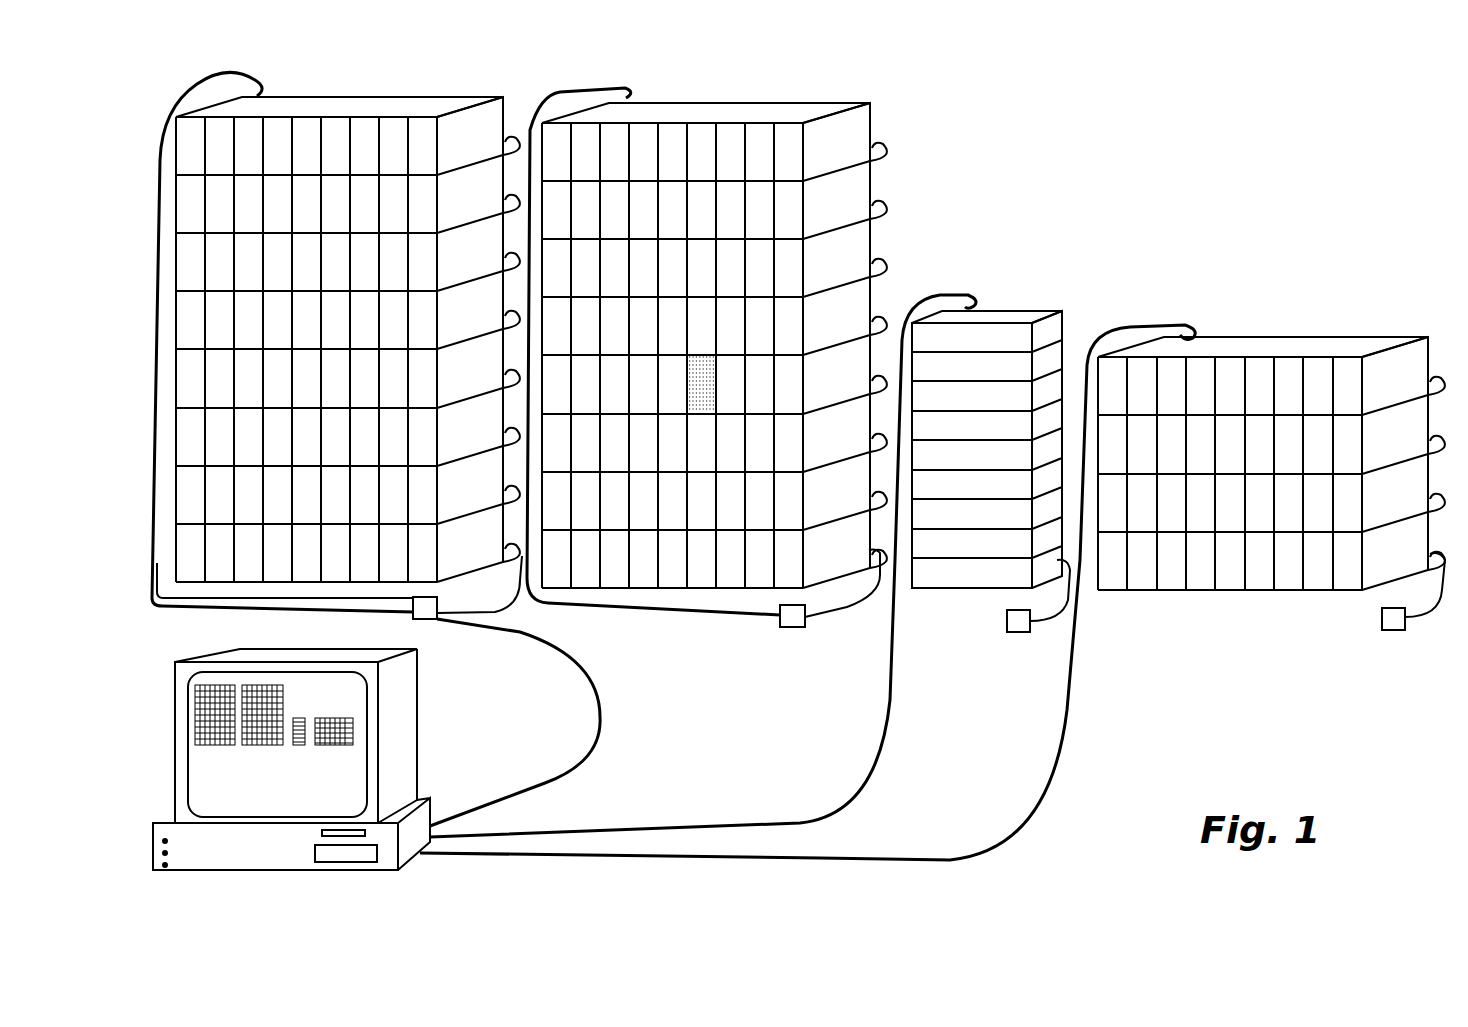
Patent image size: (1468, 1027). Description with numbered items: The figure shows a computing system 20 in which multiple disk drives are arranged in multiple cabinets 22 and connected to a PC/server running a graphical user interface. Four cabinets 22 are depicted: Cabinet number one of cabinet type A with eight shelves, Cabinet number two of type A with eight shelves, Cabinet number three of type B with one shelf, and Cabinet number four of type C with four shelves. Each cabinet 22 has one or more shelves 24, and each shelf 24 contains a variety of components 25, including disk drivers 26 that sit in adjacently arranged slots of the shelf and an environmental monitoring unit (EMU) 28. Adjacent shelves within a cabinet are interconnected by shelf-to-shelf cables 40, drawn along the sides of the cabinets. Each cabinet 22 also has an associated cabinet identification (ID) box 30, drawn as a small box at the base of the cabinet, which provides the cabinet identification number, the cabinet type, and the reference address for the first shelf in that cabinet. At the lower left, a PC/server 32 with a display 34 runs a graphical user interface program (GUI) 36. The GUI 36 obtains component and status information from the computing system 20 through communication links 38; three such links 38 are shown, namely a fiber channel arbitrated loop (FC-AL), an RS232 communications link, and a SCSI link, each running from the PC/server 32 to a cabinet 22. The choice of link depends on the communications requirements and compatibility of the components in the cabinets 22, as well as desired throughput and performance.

The computing system 20 is at (1077, 153).
The cabinet 22 is at (413, 103).
The shelf 24 is at (493, 117).
The components 25 is at (1146, 606).
The disk driver 26 is at (1198, 575).
The environmental monitoring unit (EMU) 28 is at (1348, 590).
The cabinet identification (ID) box 30 is at (440, 617).
The PC/server 32 is at (423, 820).
The display 34 is at (397, 727).
The graphical user interface program (GUI) 36 is at (337, 688).
The communication links 38 is at (573, 775).
The shelf-to-shelf cables 40 is at (886, 150).